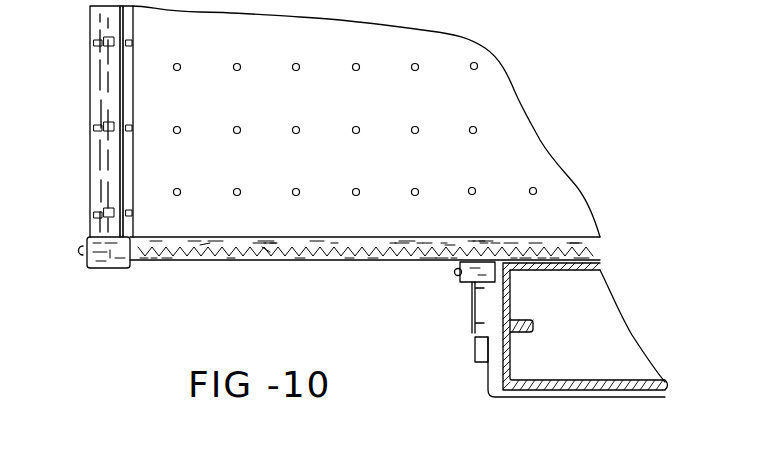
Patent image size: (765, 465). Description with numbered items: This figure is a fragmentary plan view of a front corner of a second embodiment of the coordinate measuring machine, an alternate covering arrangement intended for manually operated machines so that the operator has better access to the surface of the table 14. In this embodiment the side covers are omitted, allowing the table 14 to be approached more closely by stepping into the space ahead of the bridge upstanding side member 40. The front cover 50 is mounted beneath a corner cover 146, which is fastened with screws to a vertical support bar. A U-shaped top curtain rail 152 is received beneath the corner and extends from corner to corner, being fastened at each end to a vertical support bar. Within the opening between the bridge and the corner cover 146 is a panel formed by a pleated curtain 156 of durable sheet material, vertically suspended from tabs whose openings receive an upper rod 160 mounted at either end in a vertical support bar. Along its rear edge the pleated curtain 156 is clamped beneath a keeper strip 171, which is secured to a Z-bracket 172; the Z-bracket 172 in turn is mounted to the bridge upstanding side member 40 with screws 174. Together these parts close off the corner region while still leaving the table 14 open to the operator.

The front cover 50 is at (100, 17).
The table 14 is at (147, 163).
The corner cover 146 is at (84, 262).
The top curtain rail 152 is at (174, 262).
The upper rod 160 is at (200, 236).
The pleated curtain 156 is at (263, 238).
The keeper strip 171 is at (453, 249).
The Z-bracket 172 is at (456, 275).
The screws 174 is at (468, 322).
The bridge upstanding side member 40 is at (560, 386).